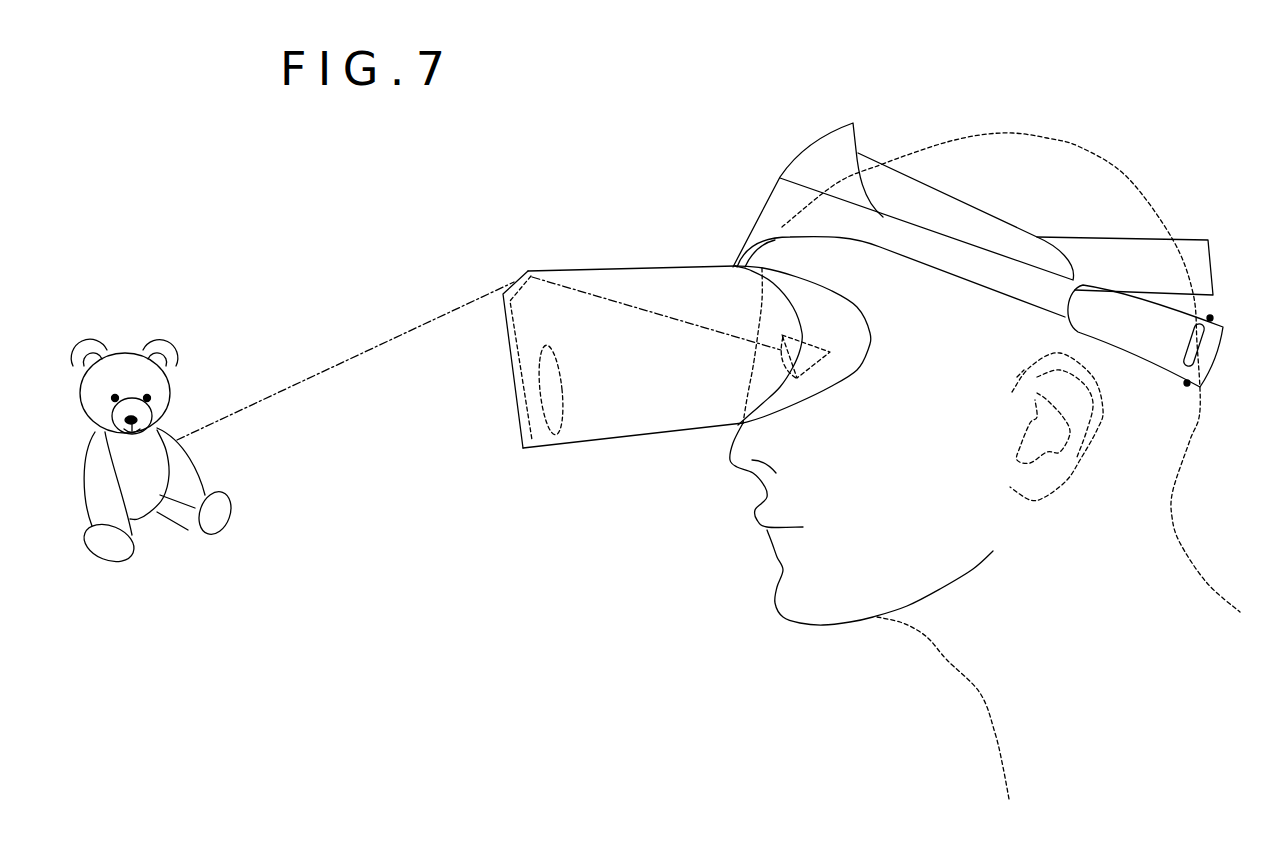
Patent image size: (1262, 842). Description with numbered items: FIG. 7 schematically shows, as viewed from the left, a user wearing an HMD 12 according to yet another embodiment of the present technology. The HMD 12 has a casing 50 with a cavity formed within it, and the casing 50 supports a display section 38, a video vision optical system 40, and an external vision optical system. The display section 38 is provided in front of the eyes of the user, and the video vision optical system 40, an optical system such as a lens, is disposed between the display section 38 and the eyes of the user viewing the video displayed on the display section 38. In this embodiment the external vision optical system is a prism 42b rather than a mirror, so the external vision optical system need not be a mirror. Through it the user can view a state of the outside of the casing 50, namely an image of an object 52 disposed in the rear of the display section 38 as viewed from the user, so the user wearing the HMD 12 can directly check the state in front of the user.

The HMD 12 is at (836, 307).
The display section 38 is at (512, 408).
The video vision optical system 40 is at (565, 399).
The prism 42b is at (540, 286).
The casing 50 is at (647, 435).
The object 52 is at (172, 391).